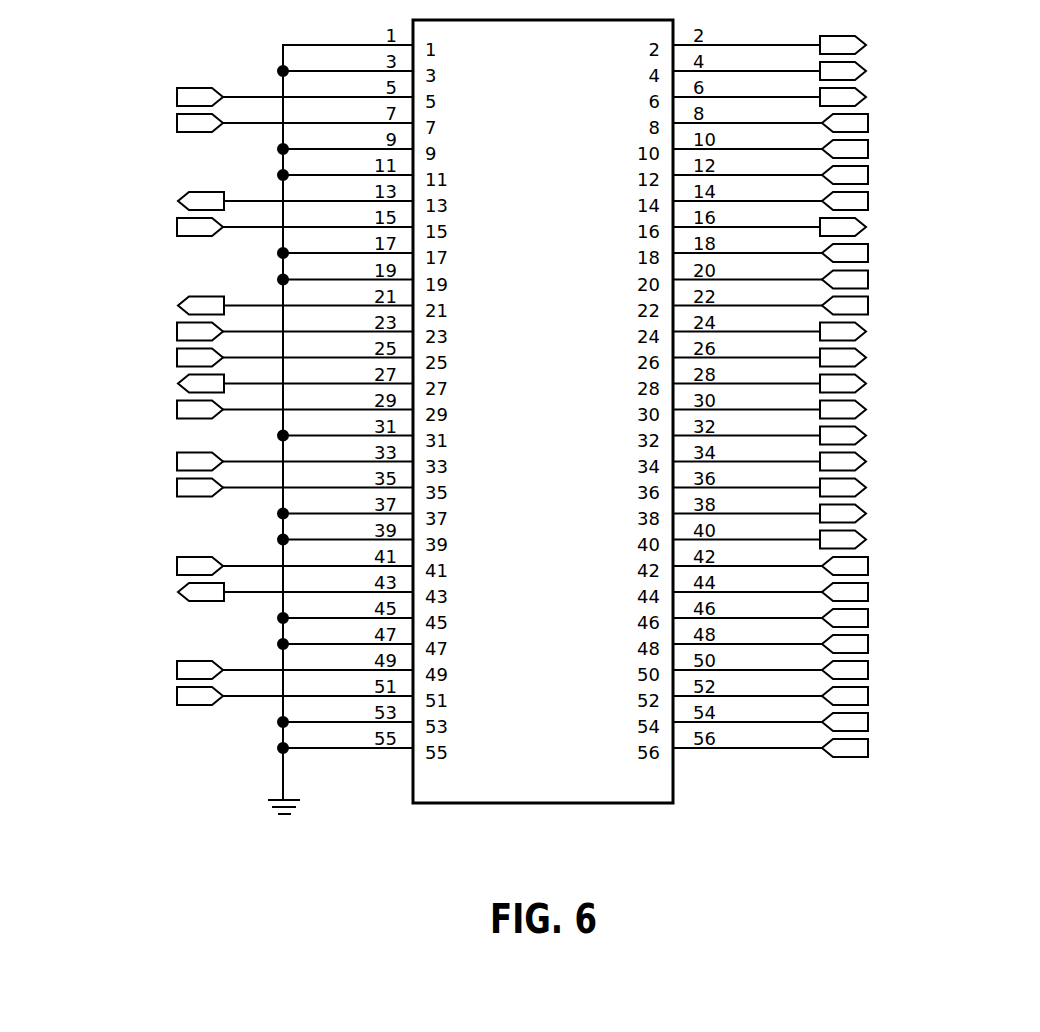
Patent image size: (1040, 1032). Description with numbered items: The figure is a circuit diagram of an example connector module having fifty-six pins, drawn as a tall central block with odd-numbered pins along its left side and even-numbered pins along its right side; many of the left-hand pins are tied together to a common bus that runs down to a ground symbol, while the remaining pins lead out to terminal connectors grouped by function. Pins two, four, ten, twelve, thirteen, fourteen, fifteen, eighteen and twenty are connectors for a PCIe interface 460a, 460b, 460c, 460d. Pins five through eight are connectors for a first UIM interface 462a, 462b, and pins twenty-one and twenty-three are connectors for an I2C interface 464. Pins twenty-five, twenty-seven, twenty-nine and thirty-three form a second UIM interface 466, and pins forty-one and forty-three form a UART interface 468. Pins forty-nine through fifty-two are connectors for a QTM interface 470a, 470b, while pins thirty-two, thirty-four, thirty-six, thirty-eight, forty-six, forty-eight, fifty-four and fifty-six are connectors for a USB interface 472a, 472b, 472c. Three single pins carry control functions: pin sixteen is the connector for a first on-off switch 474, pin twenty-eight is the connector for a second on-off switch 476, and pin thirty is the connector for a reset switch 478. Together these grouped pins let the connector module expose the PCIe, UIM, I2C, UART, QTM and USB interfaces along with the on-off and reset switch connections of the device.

The PCIe interface 460a is at (887, 36).
The PCIe interface 460b is at (163, 192).
The PCIe interface 460c is at (887, 140).
The PCIe interface 460d is at (887, 244).
The first UIM interface 462a is at (163, 88).
The first UIM interface 462b is at (887, 88).
The I2C interface 464 is at (163, 296).
The second UIM interface 466 is at (163, 497).
The UART interface 468 is at (163, 557).
The QTM interface 470a is at (163, 661).
The QTM interface 470b is at (887, 661).
The USB interface 472a is at (887, 427).
The USB interface 472b is at (887, 609).
The USB interface 472c is at (887, 713).
The first on-off switch 474 is at (880, 230).
The second on-off switch 476 is at (878, 380).
The reset switch 478 is at (878, 408).